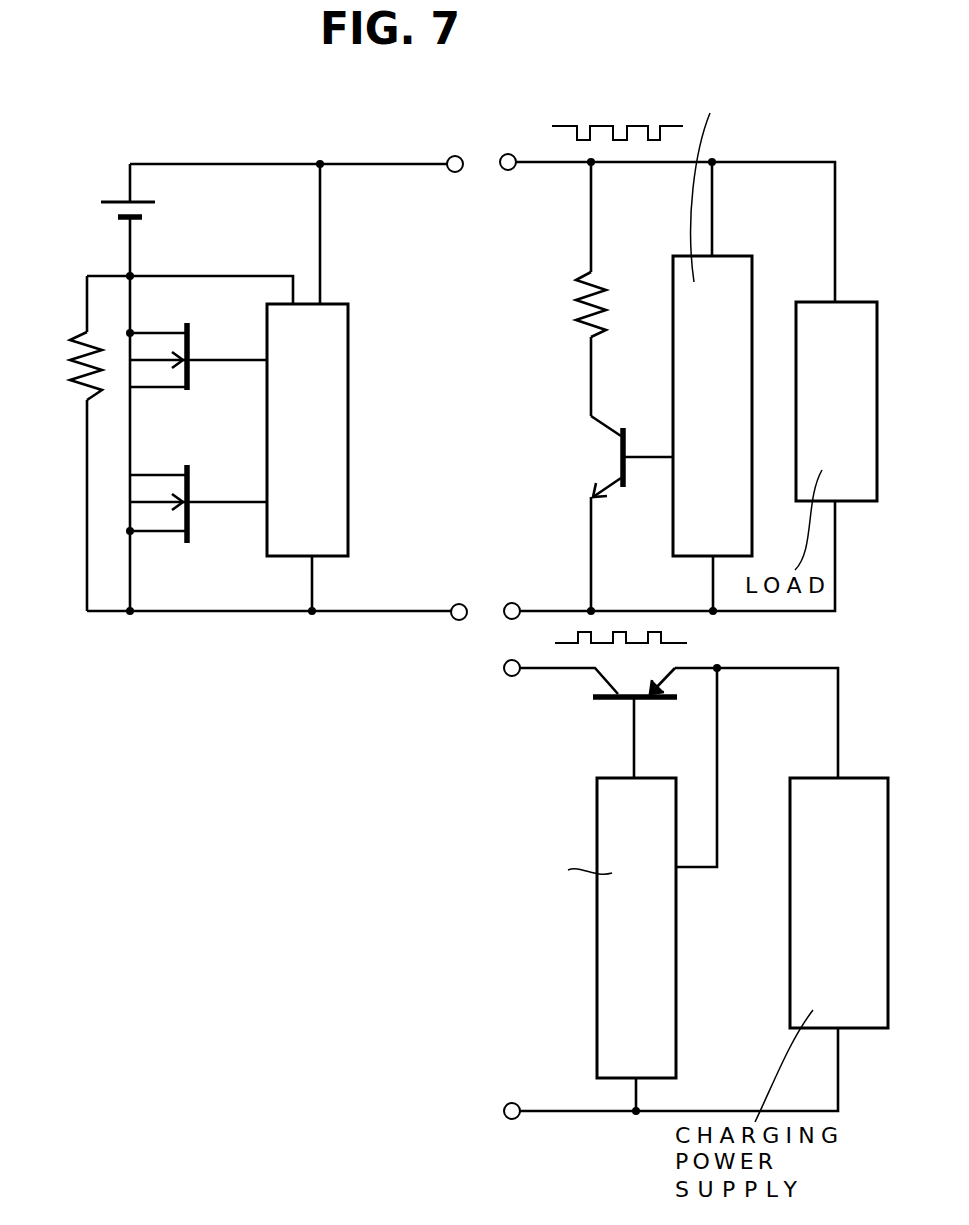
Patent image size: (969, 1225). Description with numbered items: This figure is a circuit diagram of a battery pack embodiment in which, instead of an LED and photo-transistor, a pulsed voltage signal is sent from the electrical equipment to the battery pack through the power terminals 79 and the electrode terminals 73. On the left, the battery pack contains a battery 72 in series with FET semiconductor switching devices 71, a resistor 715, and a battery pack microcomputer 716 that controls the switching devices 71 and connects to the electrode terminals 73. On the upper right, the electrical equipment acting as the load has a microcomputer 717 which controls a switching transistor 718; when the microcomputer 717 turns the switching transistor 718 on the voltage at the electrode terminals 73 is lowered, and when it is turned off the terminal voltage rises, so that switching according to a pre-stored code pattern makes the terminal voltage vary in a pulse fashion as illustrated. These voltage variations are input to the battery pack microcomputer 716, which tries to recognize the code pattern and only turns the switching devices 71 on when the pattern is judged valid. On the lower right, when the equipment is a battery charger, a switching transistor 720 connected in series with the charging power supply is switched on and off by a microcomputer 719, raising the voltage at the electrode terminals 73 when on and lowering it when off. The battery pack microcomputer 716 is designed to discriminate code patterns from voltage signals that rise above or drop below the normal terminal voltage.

The FET semiconductor switching devices 71 is at (158, 550).
The battery 72 is at (141, 203).
The electrode terminals 73 is at (455, 173).
The power terminals 79 is at (508, 171).
The resistor 715 is at (75, 375).
The battery pack microcomputer 716 is at (308, 316).
The microcomputer 717 is at (738, 266).
The switching transistor 718 is at (600, 448).
The microcomputer 719 is at (607, 952).
The switching transistor 720 is at (592, 707).